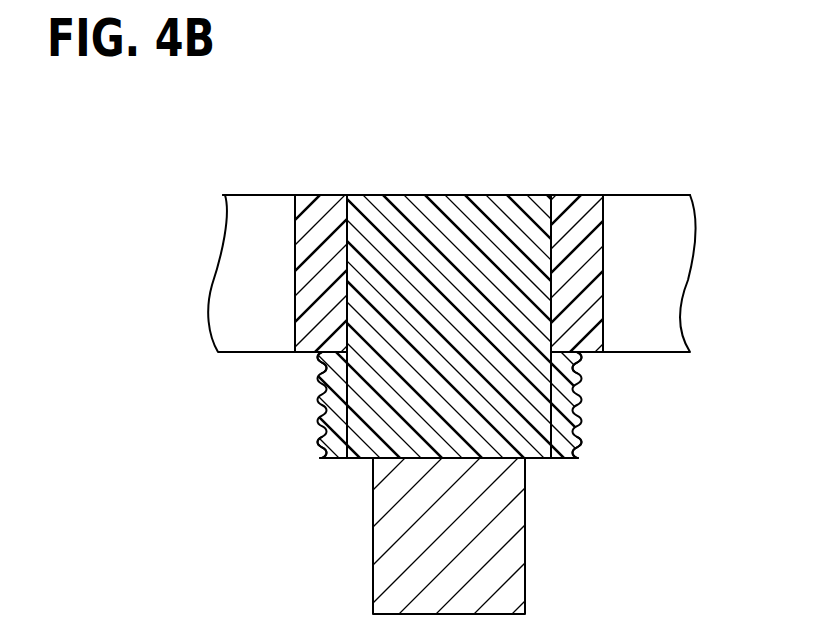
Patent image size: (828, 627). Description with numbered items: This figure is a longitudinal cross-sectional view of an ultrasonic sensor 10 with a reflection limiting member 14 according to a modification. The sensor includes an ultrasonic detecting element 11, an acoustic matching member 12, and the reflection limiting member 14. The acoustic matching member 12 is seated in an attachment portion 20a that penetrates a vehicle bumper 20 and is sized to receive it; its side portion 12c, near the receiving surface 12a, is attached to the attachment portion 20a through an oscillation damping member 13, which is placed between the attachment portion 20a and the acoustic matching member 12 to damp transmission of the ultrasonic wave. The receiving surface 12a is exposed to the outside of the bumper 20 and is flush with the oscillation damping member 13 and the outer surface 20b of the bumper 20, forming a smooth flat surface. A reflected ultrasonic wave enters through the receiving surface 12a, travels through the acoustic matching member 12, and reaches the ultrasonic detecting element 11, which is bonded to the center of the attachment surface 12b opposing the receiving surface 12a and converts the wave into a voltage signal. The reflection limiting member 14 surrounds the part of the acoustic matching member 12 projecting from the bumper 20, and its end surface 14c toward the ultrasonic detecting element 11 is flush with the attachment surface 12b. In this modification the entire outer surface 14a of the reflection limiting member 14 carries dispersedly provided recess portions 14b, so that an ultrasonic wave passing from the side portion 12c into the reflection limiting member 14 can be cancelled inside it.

The ultrasonic sensor 10 is at (651, 163).
The ultrasonic detecting element 11 is at (512, 553).
The acoustic matching member 12 is at (467, 207).
The receiving surface 12a is at (399, 205).
The attachment surface 12b is at (365, 461).
The side portion 12c is at (558, 213).
The oscillation damping member 13 is at (330, 212).
The reflection limiting member 14 is at (321, 408).
The outer surface 14a is at (319, 373).
The recess portions 14b is at (319, 454).
The end surface 14c is at (330, 461).
The bumper 20 is at (273, 195).
The attachment portion 20a is at (307, 222).
The outer surface 20b is at (230, 195).